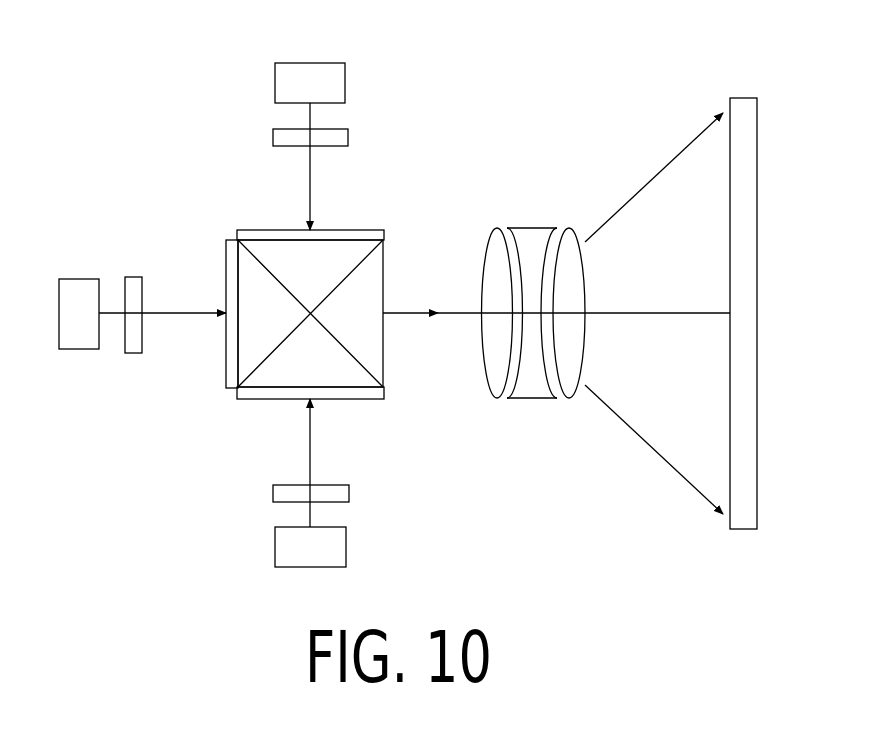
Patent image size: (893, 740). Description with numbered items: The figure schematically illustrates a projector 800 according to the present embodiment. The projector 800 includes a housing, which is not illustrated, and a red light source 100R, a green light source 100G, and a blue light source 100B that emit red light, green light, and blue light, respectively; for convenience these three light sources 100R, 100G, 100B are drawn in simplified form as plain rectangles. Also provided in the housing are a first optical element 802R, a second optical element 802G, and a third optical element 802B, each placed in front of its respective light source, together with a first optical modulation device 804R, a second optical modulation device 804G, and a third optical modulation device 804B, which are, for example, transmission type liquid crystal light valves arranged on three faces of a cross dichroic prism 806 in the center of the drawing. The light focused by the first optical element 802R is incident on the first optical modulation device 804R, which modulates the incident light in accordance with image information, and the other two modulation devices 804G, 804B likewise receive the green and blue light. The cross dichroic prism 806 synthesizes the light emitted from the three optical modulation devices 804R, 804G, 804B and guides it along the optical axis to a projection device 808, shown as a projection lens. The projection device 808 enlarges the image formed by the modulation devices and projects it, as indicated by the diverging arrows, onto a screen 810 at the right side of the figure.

The projector 800 is at (712, 24).
The red light source 100R is at (328, 82).
The green light source 100G is at (78, 344).
The blue light source 100B is at (333, 553).
The first optical element 802R is at (338, 140).
The second optical element 802G is at (135, 344).
The third optical element 802B is at (343, 494).
The first optical modulation device 804R is at (240, 235).
The second optical modulation device 804G is at (231, 388).
The third optical modulation device 804B is at (380, 390).
The cross dichroic prism 806 is at (372, 340).
The projection device 808 is at (583, 217).
The screen 810 is at (743, 107).